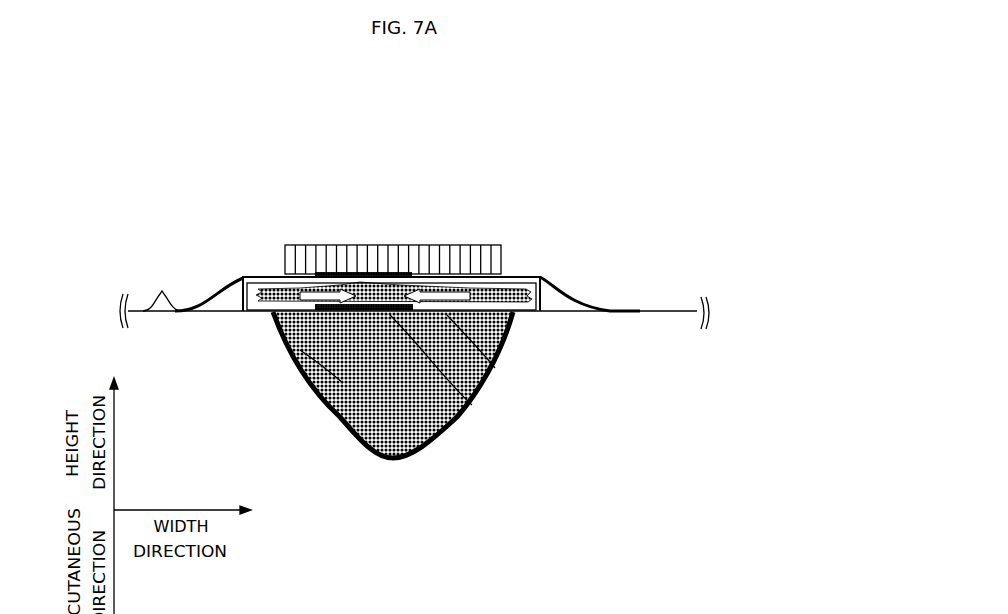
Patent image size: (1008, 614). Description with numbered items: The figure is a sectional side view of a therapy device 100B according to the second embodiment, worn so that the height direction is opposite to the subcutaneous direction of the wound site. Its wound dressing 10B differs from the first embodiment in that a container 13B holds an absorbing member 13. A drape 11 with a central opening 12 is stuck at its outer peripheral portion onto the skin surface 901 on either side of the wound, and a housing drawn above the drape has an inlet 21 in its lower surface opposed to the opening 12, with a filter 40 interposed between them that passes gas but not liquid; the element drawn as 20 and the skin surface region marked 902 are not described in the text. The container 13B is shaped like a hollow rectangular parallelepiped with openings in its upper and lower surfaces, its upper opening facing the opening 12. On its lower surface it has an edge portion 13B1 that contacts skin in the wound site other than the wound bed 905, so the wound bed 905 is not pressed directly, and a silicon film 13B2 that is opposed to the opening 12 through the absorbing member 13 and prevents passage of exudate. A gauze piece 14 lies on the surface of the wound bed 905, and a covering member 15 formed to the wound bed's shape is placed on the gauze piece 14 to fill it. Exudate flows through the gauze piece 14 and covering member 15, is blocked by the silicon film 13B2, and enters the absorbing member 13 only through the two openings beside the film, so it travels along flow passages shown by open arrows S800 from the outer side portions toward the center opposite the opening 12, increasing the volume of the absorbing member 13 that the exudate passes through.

The therapy device 100B is at (643, 76).
The wound dressing 10B is at (595, 205).
The drape 11 is at (518, 276).
The opening 12 is at (350, 288).
The absorbing member 13 is at (517, 315).
The container 13B is at (543, 302).
The edge portion 13B1 is at (533, 313).
The silicon film 13B2 is at (472, 405).
The gauze piece 14 is at (338, 422).
The covering member 15 is at (343, 382).
The circuit board 20 is at (468, 246).
The inlet 21 is at (362, 262).
The filter 40 is at (394, 274).
The skin surface 901 is at (162, 291).
The skin surface region 902 is at (632, 370).
The wound bed 905 is at (394, 462).
The open arrows S800 is at (277, 322).